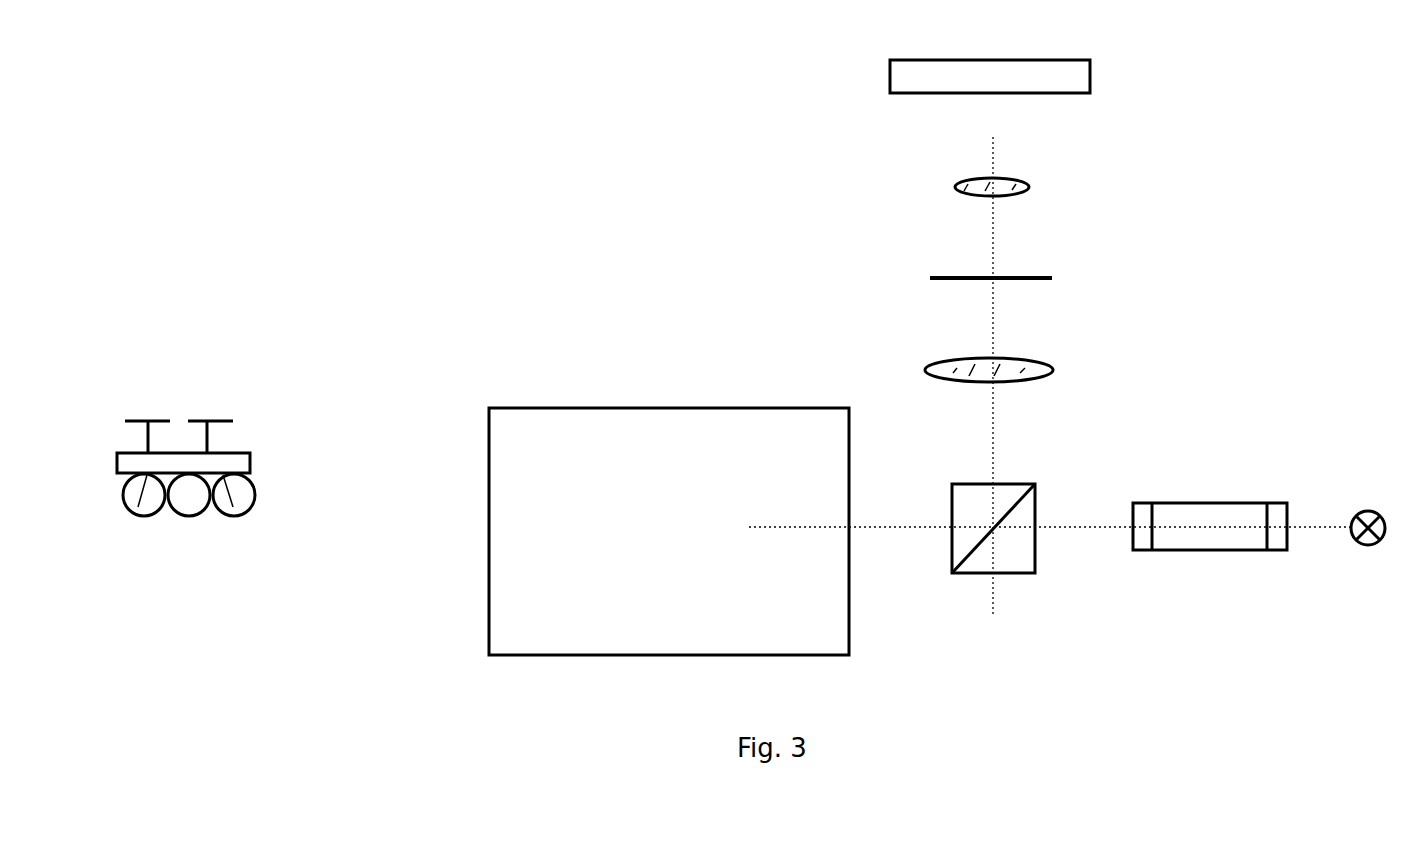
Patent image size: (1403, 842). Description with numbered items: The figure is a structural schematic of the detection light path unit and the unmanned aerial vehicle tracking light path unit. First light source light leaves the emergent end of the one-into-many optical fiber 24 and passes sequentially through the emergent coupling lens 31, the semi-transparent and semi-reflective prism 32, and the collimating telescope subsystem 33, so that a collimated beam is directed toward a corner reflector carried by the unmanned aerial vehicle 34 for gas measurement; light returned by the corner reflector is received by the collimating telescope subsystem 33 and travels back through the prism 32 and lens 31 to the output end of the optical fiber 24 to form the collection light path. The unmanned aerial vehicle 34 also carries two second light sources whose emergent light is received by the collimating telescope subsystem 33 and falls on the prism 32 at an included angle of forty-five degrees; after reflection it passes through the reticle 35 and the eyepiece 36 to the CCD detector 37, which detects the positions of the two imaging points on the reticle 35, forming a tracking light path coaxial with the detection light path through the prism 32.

The one-into-many optical fiber 24 is at (1363, 513).
The emergent coupling lens 31 is at (1235, 525).
The semi-transparent and semi-reflective prism 32 is at (1017, 522).
The collimating telescope subsystem 33 is at (749, 416).
The unmanned aerial vehicle 34 is at (208, 408).
The reticle 35 is at (1052, 278).
The eyepiece 36 is at (942, 264).
The CCD detector 37 is at (1090, 73).